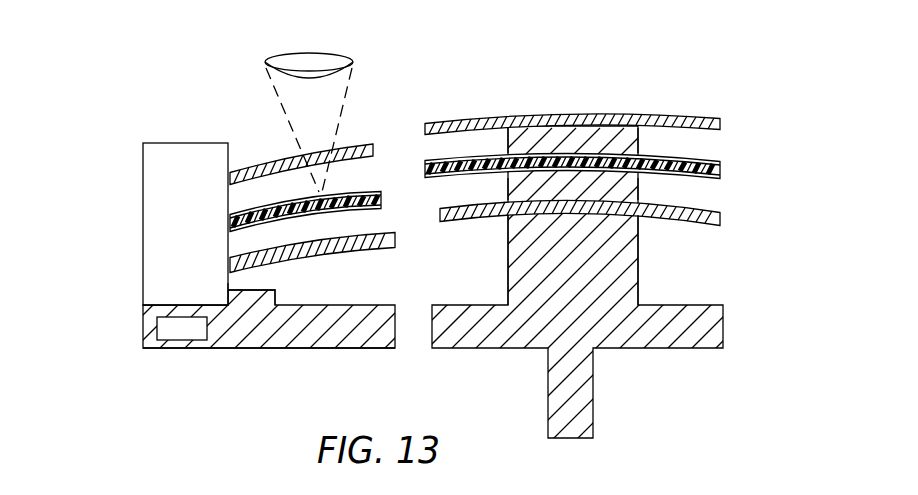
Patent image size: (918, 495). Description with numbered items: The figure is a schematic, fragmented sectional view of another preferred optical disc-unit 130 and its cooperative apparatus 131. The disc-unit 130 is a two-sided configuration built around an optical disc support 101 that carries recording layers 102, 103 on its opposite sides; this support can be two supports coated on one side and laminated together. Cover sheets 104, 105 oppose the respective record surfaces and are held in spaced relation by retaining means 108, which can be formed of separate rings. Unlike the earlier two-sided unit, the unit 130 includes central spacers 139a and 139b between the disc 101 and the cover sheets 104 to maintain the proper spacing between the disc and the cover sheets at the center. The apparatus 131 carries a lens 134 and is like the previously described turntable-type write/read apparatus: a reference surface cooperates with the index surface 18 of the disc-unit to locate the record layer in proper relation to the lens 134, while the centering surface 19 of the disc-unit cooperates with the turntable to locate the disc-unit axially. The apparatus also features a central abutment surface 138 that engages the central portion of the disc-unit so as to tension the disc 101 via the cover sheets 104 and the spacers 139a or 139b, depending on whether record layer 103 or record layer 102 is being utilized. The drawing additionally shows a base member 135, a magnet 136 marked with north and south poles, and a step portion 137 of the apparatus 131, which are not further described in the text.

The index surface 18 is at (162, 305).
The centering surface 19 is at (228, 283).
The optical disc support 101 is at (380, 195).
The recording layer 102 is at (377, 208).
The recording layer 103 is at (347, 193).
The cover sheet 104 is at (353, 144).
The cover sheet 105 is at (378, 247).
The retaining means 108 is at (143, 218).
The optical disc-unit 130 is at (594, 84).
The cooperative apparatus 131 is at (276, 372).
The lens 134 is at (331, 60).
The base member 135 is at (213, 309).
The magnet 136 is at (158, 321).
The step portion 137 is at (240, 295).
The central abutment surface 138 is at (640, 243).
The central spacer 139a is at (640, 186).
The central spacer 139b is at (640, 134).